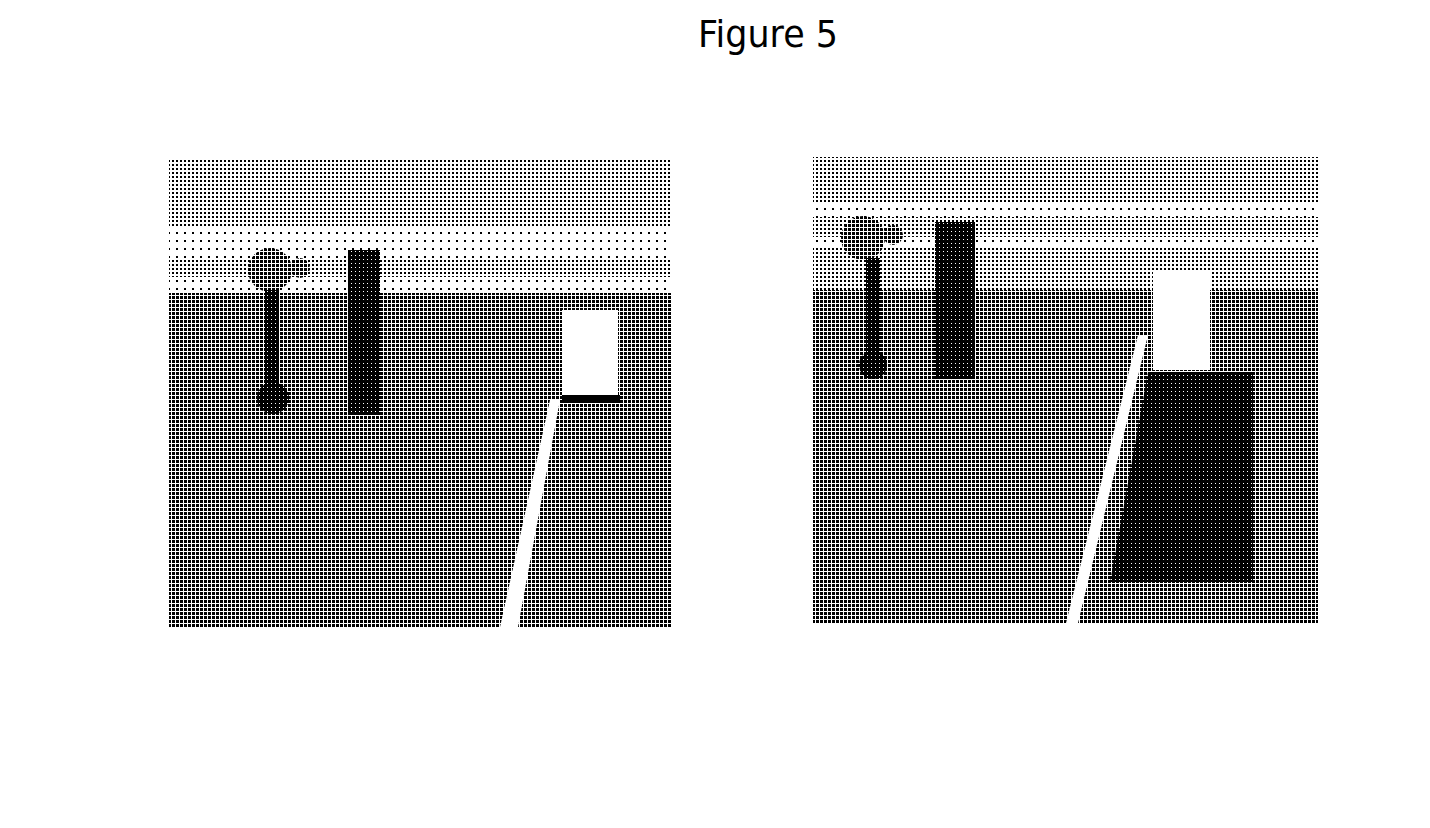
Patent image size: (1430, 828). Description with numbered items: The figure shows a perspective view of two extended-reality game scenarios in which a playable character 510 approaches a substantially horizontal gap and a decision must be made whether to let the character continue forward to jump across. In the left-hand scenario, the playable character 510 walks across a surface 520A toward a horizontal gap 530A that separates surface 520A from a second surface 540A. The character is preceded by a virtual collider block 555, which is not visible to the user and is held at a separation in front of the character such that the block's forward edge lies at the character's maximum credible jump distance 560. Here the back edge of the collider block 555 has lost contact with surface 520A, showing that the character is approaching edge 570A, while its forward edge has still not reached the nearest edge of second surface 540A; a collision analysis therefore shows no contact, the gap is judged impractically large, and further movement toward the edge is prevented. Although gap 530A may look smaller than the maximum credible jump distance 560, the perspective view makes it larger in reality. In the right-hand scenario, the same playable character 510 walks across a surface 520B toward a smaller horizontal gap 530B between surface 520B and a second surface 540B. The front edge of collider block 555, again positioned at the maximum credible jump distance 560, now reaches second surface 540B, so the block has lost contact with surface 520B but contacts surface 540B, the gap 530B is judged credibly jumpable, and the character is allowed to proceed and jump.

The playable character 510 is at (250, 252).
The surface 520A is at (272, 468).
The surface 520B is at (835, 398).
The horizontal gap 530A is at (624, 300).
The horizontal gap 530B is at (1206, 270).
The second surface 540A is at (648, 305).
The second surface 540B is at (1262, 305).
The virtual collider block 555 is at (603, 447).
The maximum credible jump distance 560 is at (637, 395).
The edge 570A is at (474, 332).